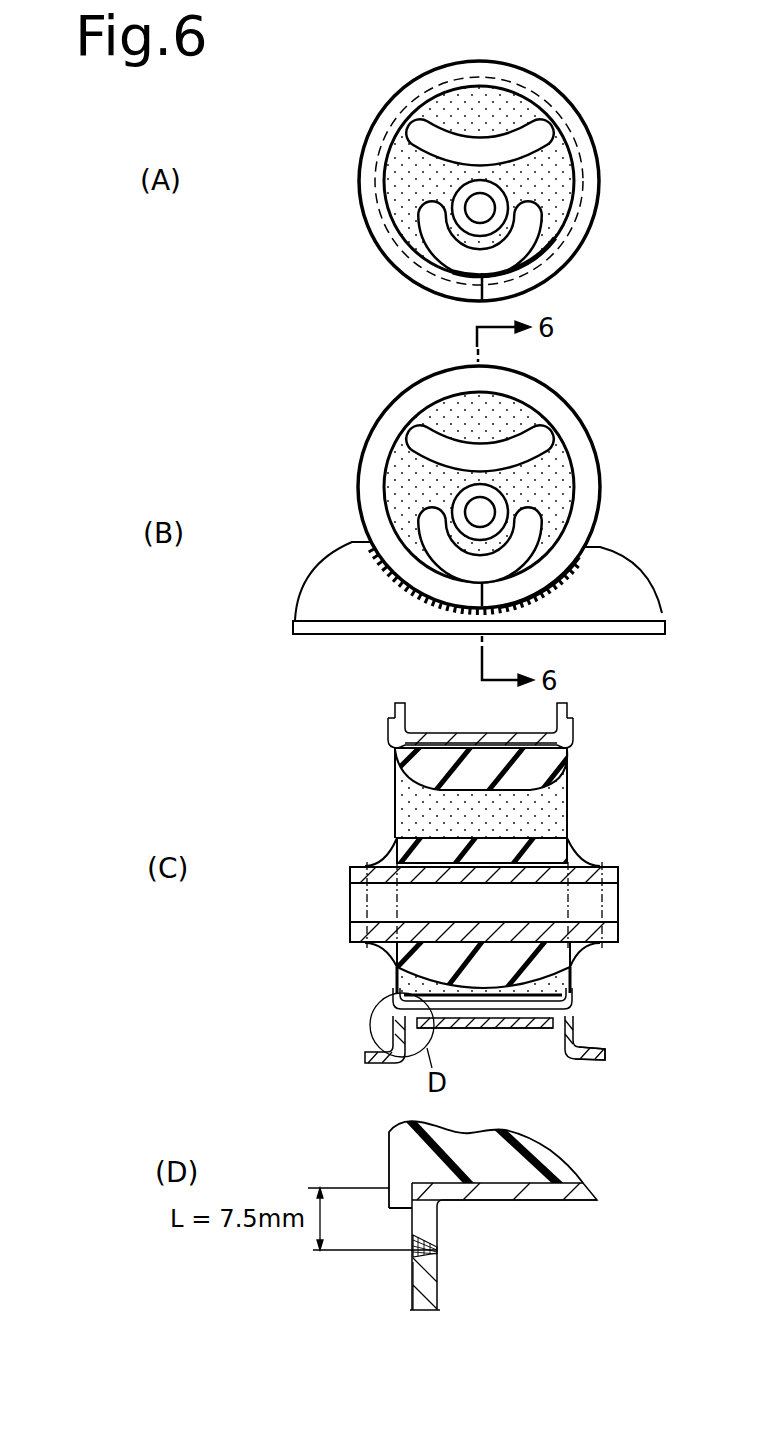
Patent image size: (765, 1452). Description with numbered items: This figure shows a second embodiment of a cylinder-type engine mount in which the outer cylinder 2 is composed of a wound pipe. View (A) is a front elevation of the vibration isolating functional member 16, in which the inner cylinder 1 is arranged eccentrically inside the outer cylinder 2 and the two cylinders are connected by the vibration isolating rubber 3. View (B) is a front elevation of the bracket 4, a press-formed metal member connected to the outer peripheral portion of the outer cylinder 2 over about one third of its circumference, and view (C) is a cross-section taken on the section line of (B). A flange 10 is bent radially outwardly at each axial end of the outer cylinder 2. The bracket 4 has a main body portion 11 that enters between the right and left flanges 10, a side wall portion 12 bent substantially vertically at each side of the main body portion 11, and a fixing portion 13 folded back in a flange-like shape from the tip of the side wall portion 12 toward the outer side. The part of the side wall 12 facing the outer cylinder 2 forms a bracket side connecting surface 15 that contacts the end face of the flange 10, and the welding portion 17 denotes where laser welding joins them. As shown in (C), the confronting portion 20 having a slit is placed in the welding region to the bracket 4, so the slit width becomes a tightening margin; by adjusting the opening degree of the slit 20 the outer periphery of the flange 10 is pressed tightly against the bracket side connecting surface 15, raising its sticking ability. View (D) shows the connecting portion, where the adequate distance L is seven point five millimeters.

The inner cylinder 1 is at (502, 213).
The outer cylinder 2 is at (392, 104).
The vibration isolating rubber 3 is at (550, 163).
The bracket 4 is at (645, 570).
The flange 10 is at (543, 73).
The main body portion 11 is at (523, 1032).
The side wall portion 12 is at (587, 567).
The fixing portion 13 is at (603, 1060).
The bracket side connecting surface 15 is at (585, 562).
The vibration isolating functional member 16 is at (358, 148).
The welding portion 17 is at (557, 585).
The confronting portion 20 is at (484, 288).